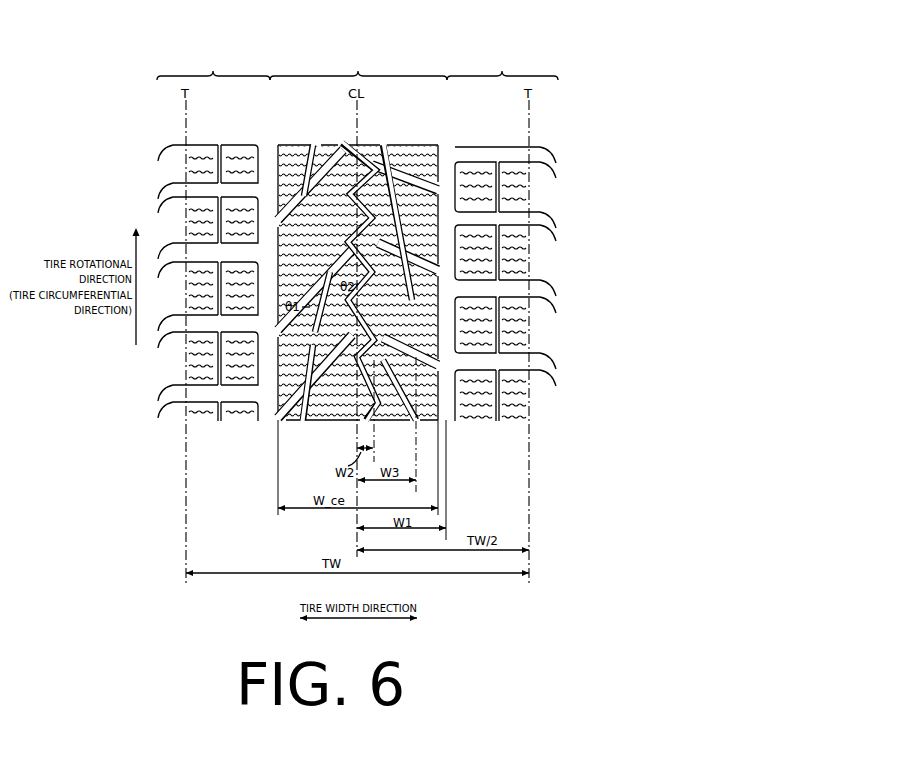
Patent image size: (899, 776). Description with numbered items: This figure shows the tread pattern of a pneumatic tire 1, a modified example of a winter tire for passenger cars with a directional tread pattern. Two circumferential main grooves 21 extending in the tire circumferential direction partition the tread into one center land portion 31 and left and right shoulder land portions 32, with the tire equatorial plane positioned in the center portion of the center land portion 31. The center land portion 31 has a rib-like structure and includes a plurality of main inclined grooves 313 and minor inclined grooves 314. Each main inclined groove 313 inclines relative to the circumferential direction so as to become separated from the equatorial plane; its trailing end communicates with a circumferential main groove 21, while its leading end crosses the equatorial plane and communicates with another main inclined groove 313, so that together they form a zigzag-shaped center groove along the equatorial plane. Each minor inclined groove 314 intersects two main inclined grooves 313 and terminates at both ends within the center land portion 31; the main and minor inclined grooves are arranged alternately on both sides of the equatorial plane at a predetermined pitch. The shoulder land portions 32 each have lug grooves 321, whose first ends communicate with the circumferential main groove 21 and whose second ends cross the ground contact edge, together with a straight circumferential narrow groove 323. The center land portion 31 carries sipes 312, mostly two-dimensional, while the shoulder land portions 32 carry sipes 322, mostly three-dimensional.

The pneumatic tire 1 is at (561, 48).
The circumferential main groove 21 is at (268, 148).
The center land portion 31 is at (396, 130).
The shoulder land portion 32 is at (222, 130).
The sipe 312 is at (343, 147).
The main inclined groove 313 is at (283, 150).
The minor inclined groove 314 is at (313, 147).
The lug groove 321 is at (546, 206).
The sipe 322 is at (532, 243).
The circumferential narrow groove 323 is at (497, 148).